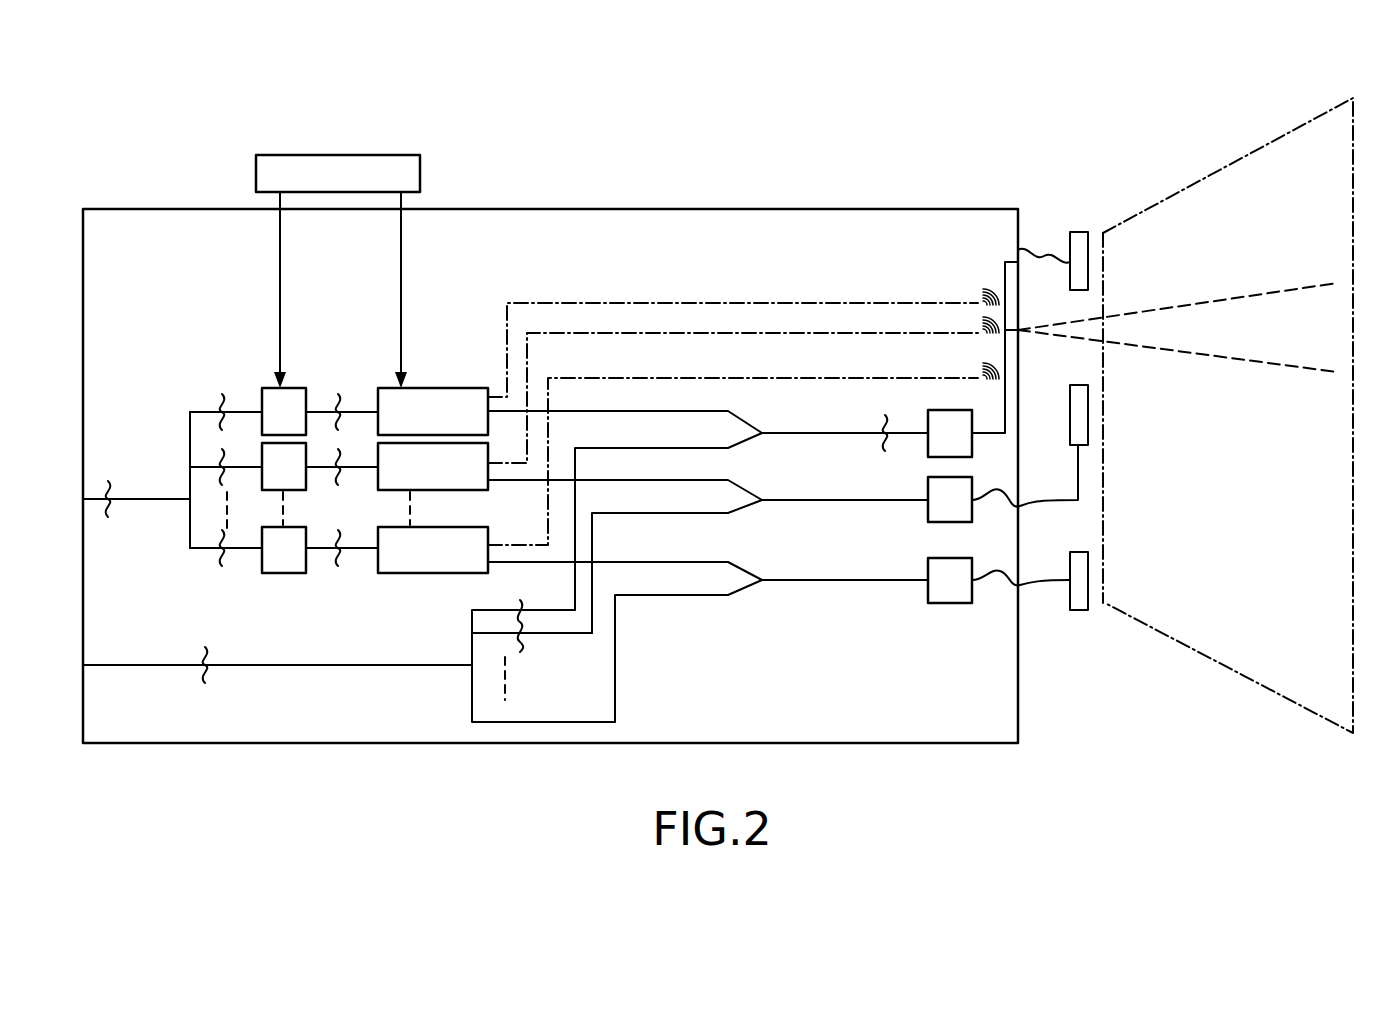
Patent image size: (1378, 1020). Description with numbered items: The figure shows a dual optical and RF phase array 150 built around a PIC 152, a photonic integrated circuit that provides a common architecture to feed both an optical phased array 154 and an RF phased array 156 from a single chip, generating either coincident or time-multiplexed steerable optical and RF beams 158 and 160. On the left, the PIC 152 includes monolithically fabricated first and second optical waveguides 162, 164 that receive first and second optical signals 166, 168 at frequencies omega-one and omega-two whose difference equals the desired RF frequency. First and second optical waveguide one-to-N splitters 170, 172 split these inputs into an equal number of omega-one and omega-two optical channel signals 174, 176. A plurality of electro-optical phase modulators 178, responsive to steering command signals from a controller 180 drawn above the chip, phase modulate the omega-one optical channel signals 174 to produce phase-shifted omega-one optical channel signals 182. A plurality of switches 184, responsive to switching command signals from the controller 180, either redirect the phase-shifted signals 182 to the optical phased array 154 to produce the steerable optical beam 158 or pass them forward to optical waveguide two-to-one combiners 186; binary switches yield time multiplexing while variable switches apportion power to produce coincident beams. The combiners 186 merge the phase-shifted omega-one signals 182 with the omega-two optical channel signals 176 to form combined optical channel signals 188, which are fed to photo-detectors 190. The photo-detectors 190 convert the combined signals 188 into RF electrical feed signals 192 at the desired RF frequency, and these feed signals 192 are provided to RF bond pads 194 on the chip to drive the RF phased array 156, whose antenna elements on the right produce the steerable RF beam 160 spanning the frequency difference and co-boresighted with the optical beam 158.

The dual optical and RF phase array 150 is at (1033, 180).
The PIC 152 is at (787, 686).
The optical phased array 154 is at (985, 290).
The RF phased array 156 is at (1088, 250).
The steerable optical beam 158 is at (1232, 340).
The steerable RF beam 160 is at (1247, 648).
The first optical waveguide 162 is at (152, 502).
The second optical waveguide 164 is at (130, 680).
The first optical signal 166 is at (108, 481).
The second optical signal 168 is at (205, 647).
The first optical waveguide 1:N splitter 170 is at (190, 425).
The second optical waveguide 1:N splitter 172 is at (472, 620).
The ω1 optical channel signals 174 is at (220, 392).
The ω2 optical channel signals 176 is at (524, 604).
The electro-optical phase modulator 178 is at (266, 386).
The controller 180 is at (420, 170).
The phase-shifted ω1 optical channel signals 182 is at (338, 393).
The switch 184 is at (455, 386).
The optical waveguide 2:1 combiner 186 is at (748, 432).
The combined optical channel signals 188 is at (885, 415).
The photo-detector 190 is at (973, 421).
The RF electrical feed signals 192 is at (1023, 498).
The RF bond pad 194 is at (985, 500).